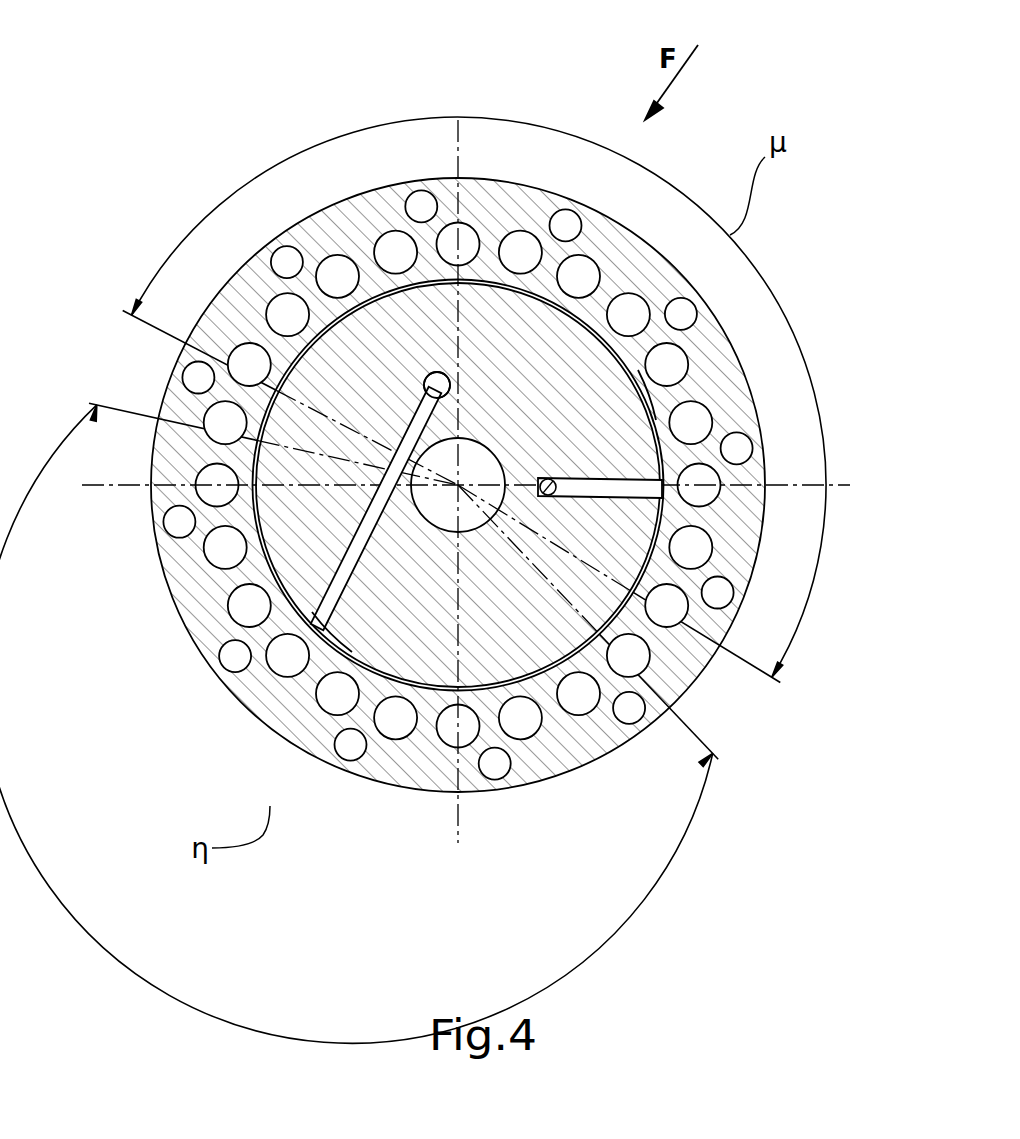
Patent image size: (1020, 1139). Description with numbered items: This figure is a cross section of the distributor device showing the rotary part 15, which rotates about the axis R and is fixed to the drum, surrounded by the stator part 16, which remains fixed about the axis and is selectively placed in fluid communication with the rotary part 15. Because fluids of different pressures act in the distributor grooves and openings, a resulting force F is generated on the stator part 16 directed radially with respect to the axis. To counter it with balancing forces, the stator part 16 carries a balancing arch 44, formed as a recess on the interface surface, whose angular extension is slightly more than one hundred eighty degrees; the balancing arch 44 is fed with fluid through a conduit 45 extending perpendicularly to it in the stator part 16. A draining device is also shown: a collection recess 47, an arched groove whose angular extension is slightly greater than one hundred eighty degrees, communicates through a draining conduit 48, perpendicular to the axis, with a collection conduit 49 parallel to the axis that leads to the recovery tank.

The rotary part 15 is at (512, 198).
The stator part 16 is at (522, 645).
The balancing arch 44 is at (342, 653).
The conduit 45 is at (341, 570).
The collection recess 47 is at (650, 405).
The draining conduit 48 is at (617, 495).
The collection conduit 49 is at (551, 480).